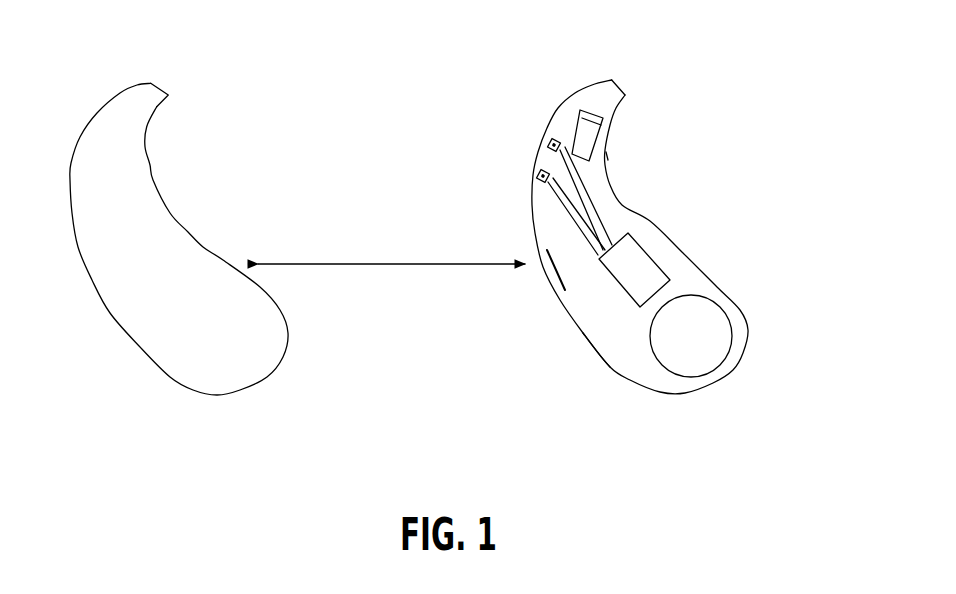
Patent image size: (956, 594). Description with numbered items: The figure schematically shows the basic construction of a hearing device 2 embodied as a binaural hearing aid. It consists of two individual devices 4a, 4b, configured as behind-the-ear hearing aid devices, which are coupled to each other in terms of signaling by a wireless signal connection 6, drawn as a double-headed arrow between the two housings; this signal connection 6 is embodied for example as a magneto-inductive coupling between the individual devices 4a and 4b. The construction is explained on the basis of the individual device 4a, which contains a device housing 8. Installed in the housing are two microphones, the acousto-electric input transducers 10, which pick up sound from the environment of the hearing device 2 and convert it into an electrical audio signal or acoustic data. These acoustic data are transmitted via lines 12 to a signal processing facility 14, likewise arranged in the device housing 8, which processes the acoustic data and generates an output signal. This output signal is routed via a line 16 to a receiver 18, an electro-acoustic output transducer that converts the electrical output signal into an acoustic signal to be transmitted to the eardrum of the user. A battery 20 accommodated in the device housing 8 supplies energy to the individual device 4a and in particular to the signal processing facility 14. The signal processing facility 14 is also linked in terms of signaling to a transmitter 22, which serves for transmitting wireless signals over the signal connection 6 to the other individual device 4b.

The hearing device 2 is at (690, 88).
The individual device 4a is at (555, 332).
The individual device 4b is at (207, 183).
The signal connection 6 is at (391, 224).
The device housing 8 is at (633, 382).
The acousto-electric input transducers 10 is at (551, 141).
The lines 12 is at (561, 163).
The signal processing facility 14 is at (652, 257).
The line 16 is at (604, 185).
The receiver 18 is at (606, 142).
The battery 20 is at (707, 330).
The transmitter 22 is at (602, 266).